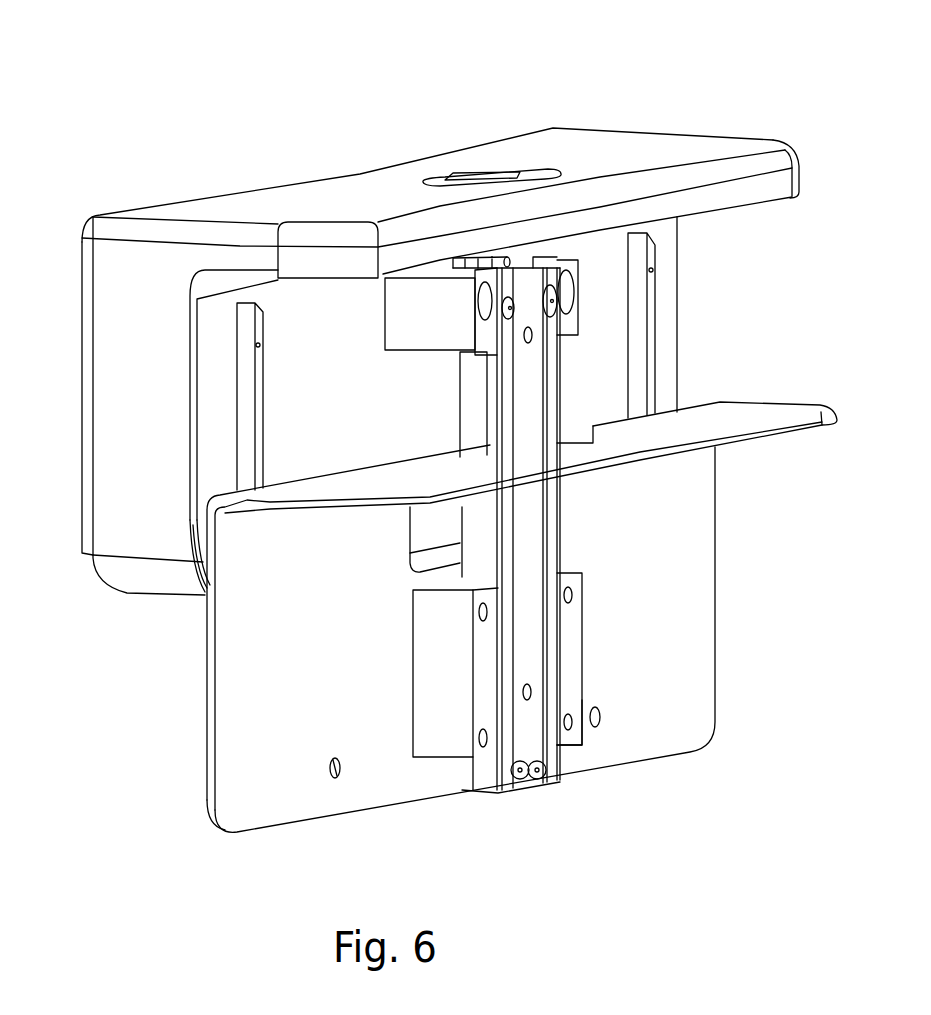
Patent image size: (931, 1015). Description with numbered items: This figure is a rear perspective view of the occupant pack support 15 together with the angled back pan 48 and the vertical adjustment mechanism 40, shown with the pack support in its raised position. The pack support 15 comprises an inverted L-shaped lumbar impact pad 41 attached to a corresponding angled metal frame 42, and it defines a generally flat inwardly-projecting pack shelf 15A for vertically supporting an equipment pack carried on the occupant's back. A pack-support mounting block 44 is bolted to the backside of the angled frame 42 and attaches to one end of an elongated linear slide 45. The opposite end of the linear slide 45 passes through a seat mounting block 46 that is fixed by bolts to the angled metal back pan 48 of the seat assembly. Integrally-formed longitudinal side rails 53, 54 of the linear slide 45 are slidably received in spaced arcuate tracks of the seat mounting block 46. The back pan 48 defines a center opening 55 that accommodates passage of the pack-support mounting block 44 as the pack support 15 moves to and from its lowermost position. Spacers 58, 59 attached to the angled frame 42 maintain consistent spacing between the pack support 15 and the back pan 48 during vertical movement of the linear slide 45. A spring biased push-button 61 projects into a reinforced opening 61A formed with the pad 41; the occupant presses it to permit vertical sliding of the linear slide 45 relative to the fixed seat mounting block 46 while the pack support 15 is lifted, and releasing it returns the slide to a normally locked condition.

The occupant pack support 15 is at (719, 117).
The pack shelf 15A is at (350, 187).
The adjustment mechanism 40 is at (594, 637).
The lumbar impact pad 41 is at (217, 210).
The angled metal frame 42 is at (207, 360).
The pack-support mounting block 44 is at (397, 325).
The linear slide 45 is at (523, 527).
The seat mounting block 46 is at (427, 670).
The angled metal back pan 48 is at (690, 602).
The longitudinal side rail 53 is at (473, 525).
The longitudinal side rail 54 is at (550, 563).
The center opening 55 is at (560, 441).
The spacer 58 is at (242, 408).
The spacer 59 is at (653, 310).
The spring biased push-button 61 is at (520, 258).
The reinforced opening 61A is at (493, 172).